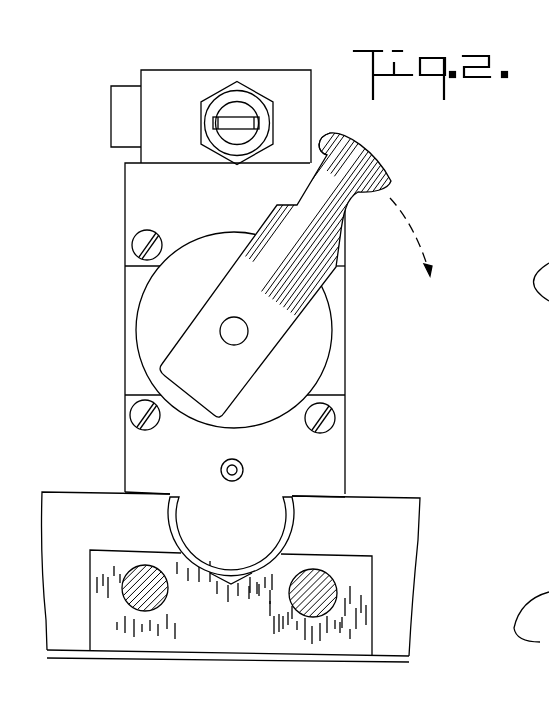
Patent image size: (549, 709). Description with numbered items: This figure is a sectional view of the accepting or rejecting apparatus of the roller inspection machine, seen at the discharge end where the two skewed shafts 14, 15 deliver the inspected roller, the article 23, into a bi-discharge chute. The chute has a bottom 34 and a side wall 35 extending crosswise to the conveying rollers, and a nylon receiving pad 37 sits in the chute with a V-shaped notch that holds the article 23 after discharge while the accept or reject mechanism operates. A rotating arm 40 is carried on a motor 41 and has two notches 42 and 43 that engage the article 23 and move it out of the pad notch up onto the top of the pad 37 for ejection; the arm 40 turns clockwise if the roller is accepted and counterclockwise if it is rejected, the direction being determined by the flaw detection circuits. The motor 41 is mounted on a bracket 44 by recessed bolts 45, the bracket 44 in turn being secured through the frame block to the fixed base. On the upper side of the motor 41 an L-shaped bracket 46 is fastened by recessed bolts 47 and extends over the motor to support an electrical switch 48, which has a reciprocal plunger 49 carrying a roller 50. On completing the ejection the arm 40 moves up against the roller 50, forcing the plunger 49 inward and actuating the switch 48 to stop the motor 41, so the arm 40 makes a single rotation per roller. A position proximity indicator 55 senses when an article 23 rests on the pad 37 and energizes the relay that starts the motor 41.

The shaft 14 is at (162, 603).
The shaft 15 is at (293, 610).
The article (roller) 23 is at (187, 528).
The bottom 34 is at (380, 663).
The side wall 35 is at (402, 510).
The nylon receiving pad 37 is at (122, 640).
The rotating arm 40 is at (357, 152).
The motor 41 is at (318, 353).
The notch 42 is at (332, 131).
The notch 43 is at (388, 194).
The bracket 44 is at (137, 452).
The recessed bolts 45 is at (333, 420).
The L-shaped bracket 46 is at (135, 207).
The recessed bolts 47 is at (135, 251).
The electrical switch 48 is at (170, 80).
The reciprocal plunger 49 is at (232, 105).
The roller 50 is at (247, 117).
The position proximity indicator 55 is at (221, 470).